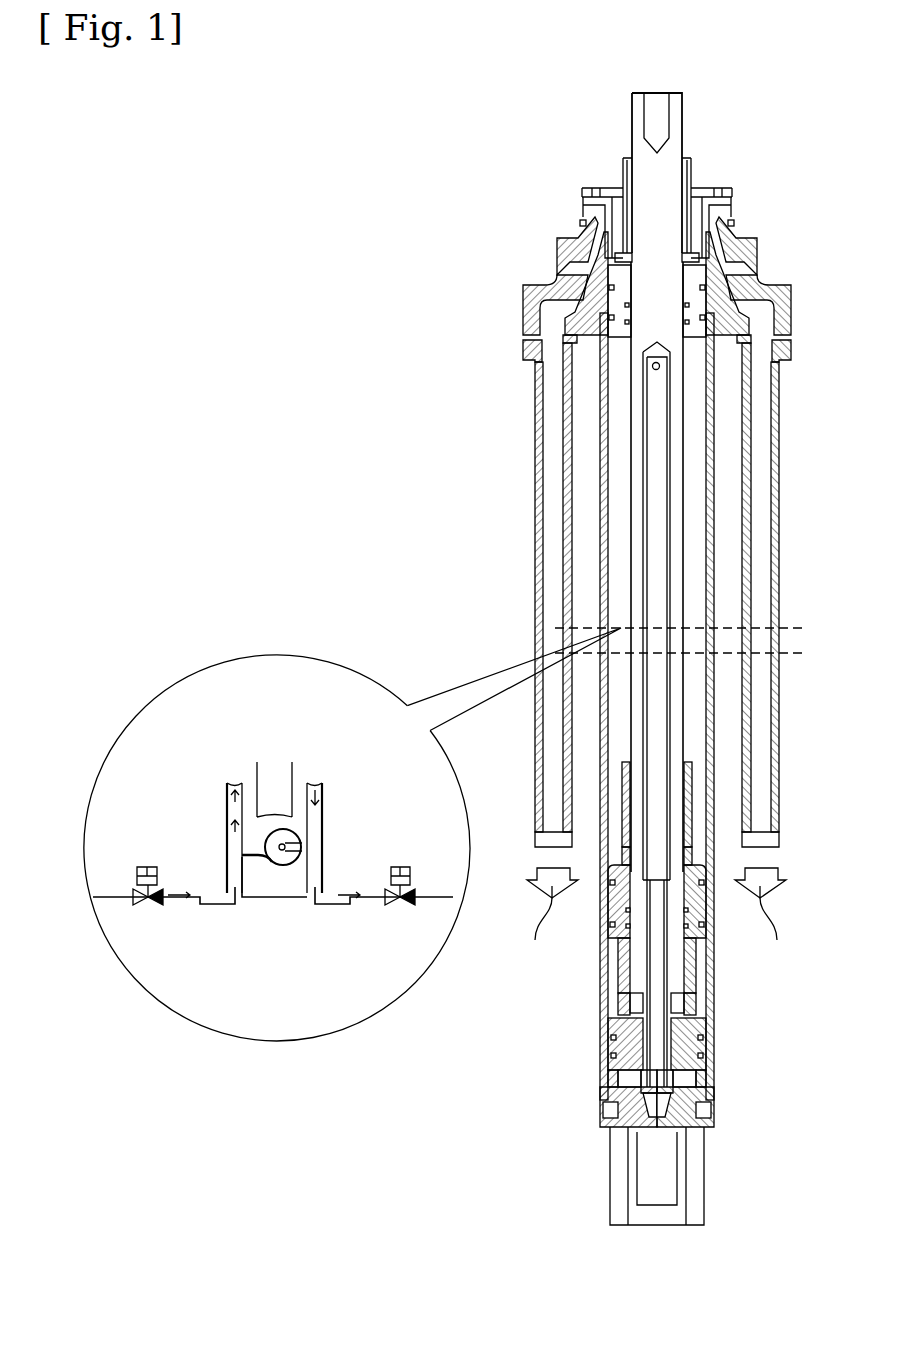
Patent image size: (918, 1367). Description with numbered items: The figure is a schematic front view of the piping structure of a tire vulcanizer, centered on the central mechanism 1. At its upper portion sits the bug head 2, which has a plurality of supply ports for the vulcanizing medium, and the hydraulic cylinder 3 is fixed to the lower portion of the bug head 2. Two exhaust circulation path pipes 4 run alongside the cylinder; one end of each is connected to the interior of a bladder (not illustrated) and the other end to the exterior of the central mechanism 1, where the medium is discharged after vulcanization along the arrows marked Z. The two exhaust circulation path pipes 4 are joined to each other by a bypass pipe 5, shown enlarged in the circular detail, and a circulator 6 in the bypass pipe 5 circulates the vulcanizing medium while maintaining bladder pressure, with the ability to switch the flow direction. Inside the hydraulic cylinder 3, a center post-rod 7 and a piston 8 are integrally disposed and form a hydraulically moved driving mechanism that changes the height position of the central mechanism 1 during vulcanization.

The central mechanism 1 is at (493, 166).
The bug head 2 is at (812, 93).
The hydraulic cylinder 3 is at (812, 237).
The exhaust circulation path pipes 4 is at (535, 447).
The bypass pipe 5 is at (621, 628).
The circulator 6 is at (283, 858).
The center post-rod 7 is at (636, 990).
The piston 8 is at (606, 912).